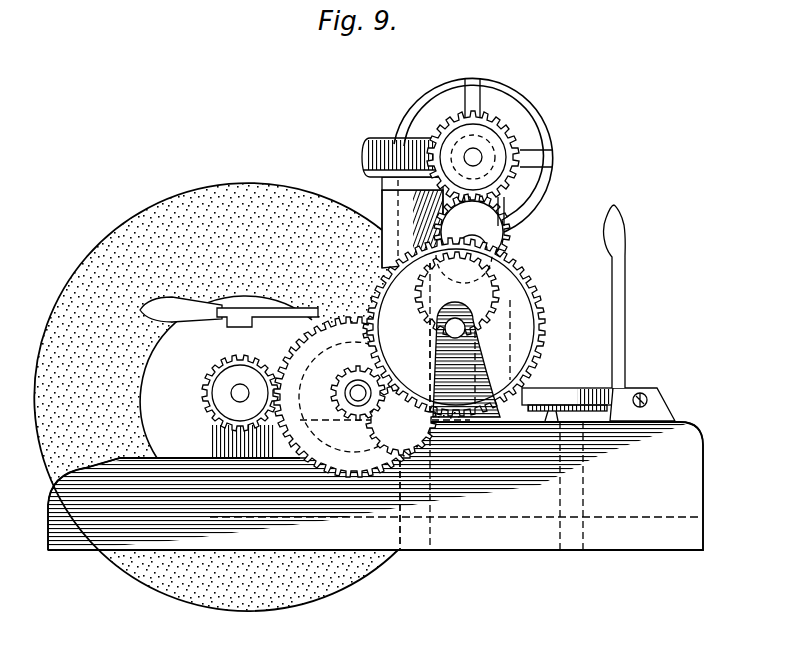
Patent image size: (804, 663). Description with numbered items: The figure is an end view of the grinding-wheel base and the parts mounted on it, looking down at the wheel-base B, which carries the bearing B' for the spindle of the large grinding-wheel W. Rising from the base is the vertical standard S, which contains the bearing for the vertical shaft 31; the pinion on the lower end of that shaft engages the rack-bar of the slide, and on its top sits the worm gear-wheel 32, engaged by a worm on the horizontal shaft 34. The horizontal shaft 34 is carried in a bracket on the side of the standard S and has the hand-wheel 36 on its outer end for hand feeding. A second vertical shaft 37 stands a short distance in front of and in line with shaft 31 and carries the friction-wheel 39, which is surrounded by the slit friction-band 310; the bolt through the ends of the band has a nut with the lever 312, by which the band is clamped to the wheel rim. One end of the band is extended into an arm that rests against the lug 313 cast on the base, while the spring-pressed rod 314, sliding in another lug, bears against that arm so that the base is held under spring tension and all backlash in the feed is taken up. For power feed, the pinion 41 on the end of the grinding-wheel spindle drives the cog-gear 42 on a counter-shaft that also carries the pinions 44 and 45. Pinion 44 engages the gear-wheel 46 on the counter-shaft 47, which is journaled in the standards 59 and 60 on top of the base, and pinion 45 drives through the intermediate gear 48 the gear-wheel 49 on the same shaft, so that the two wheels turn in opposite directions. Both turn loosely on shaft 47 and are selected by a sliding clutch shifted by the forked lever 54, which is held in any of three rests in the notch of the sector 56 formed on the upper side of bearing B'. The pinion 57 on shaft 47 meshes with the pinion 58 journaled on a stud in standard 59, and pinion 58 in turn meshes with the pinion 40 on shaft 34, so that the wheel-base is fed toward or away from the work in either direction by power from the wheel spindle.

The grinding-wheel W is at (146, 212).
The wheel-base B is at (375, 395).
The bearing for the grinding-wheel spindle B' is at (226, 377).
The vertical standard S is at (398, 262).
The vertical shaft 31 is at (433, 509).
The worm gear-wheel 32 is at (363, 149).
The horizontal shaft 34 is at (463, 153).
The hand-wheel 36 is at (497, 89).
The second vertical shaft 37 is at (584, 512).
The friction-wheel 39 is at (548, 411).
The pinion 40 is at (505, 155).
The pinion 41 is at (222, 386).
The cog-gear 42 is at (372, 395).
The pinion 44 is at (341, 376).
The pinion 45 is at (332, 390).
The gear-wheel 46 is at (536, 360).
The counter-shaft 47 is at (465, 328).
The intermediate gear 48 is at (386, 437).
The gear-wheel 49 is at (533, 304).
The forked lever 54 is at (262, 318).
The sector 56 is at (215, 318).
The pinion 57 is at (494, 306).
The pinion 58 is at (507, 233).
The standard 59 is at (500, 205).
The standard 60 is at (466, 359).
The friction-band 310 is at (547, 394).
The lever 312 is at (615, 328).
The lug 313 is at (636, 404).
The rod 314 is at (642, 404).